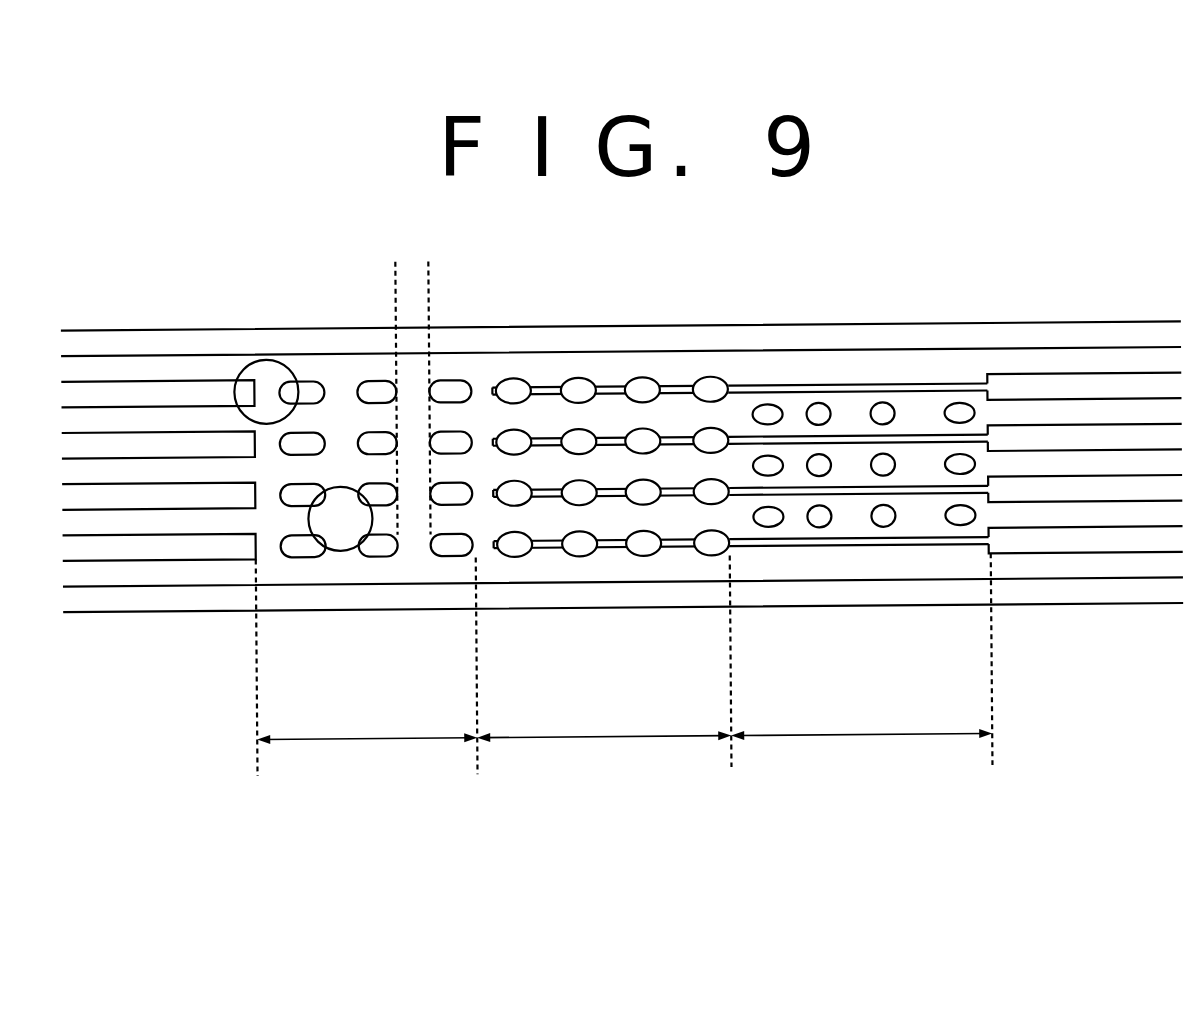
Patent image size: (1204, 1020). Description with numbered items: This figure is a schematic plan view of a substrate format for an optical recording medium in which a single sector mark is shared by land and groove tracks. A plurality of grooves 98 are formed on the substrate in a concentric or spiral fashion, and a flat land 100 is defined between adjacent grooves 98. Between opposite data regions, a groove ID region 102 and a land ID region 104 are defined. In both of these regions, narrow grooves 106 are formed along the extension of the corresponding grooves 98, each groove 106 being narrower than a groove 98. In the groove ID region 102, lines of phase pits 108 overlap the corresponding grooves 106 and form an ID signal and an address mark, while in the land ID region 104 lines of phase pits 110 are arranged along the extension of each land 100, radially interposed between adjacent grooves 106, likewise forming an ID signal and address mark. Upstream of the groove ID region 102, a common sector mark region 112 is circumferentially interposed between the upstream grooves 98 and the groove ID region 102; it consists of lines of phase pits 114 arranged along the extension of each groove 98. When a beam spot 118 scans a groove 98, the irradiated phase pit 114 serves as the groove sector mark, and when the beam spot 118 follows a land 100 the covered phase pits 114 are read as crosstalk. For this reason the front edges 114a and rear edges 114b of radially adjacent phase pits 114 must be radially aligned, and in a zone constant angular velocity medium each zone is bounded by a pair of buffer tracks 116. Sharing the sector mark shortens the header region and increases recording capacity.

The groove 98 is at (621, 343).
The land 100 is at (622, 514).
The groove ID region 102 is at (604, 755).
The land ID region 104 is at (861, 676).
The groove 106 is at (858, 414).
The phase pit 108 is at (611, 475).
The phase pit 110 is at (863, 463).
The common sector mark region 112 is at (367, 679).
The phase pit 114 is at (381, 421).
The front edge 114a is at (469, 396).
The rear edge 114b is at (352, 396).
The buffer track 116 is at (1083, 472).
The beam spot 118 is at (271, 468).